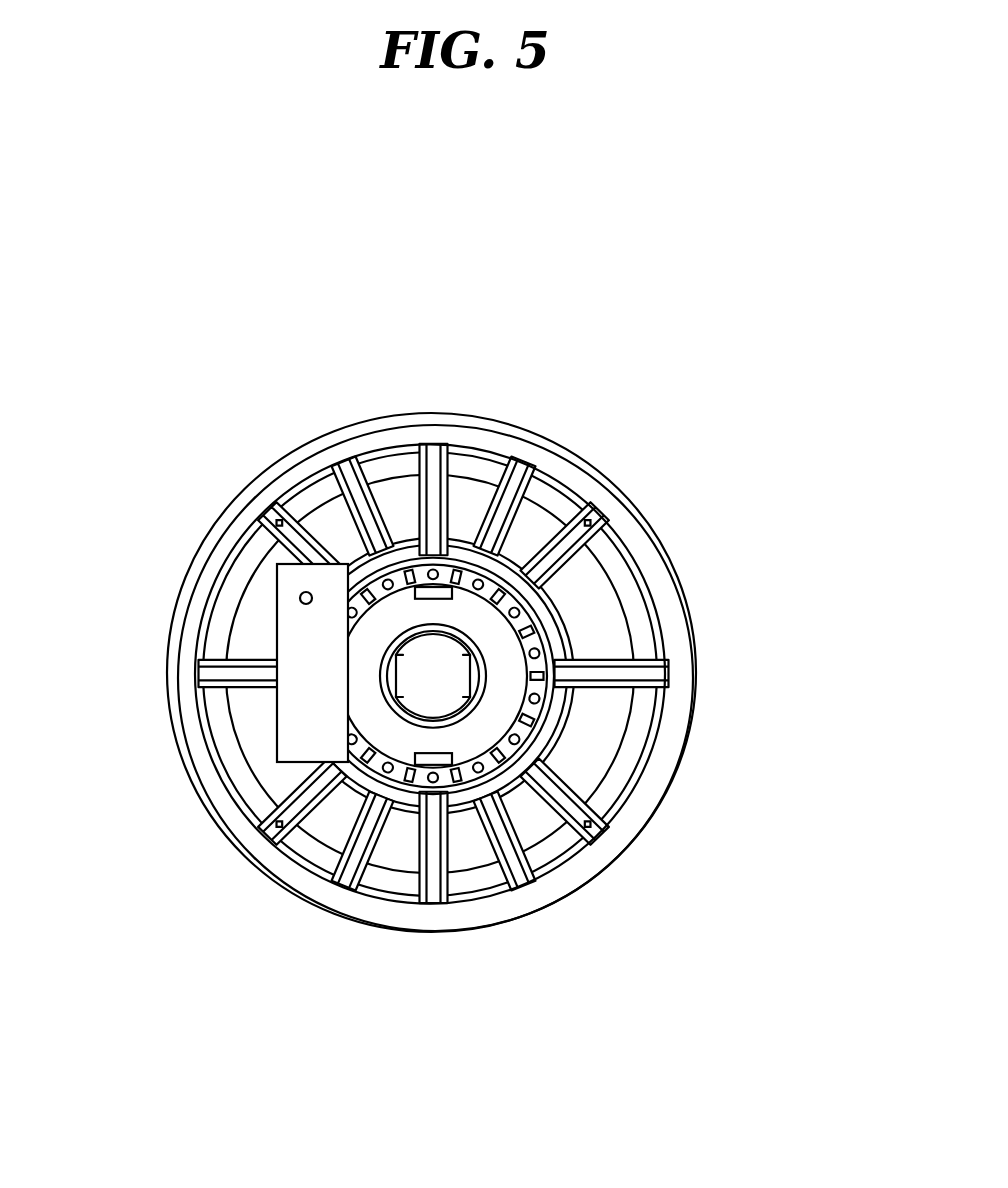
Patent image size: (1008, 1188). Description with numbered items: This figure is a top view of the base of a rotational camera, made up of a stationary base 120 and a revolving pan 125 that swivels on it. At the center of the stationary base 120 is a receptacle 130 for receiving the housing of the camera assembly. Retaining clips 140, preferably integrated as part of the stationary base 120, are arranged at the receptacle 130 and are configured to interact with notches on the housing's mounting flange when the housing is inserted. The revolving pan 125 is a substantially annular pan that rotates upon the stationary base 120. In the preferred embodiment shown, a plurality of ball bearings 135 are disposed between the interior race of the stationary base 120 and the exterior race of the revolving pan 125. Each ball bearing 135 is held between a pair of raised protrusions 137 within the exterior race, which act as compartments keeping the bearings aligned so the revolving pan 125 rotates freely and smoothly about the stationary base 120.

The stationary base 120 is at (205, 805).
The revolving pan 125 is at (663, 630).
The receptacle 130 is at (435, 668).
The ball bearings 135 is at (540, 718).
The raised protrusions 137 is at (545, 640).
The retaining clips 140 is at (443, 587).